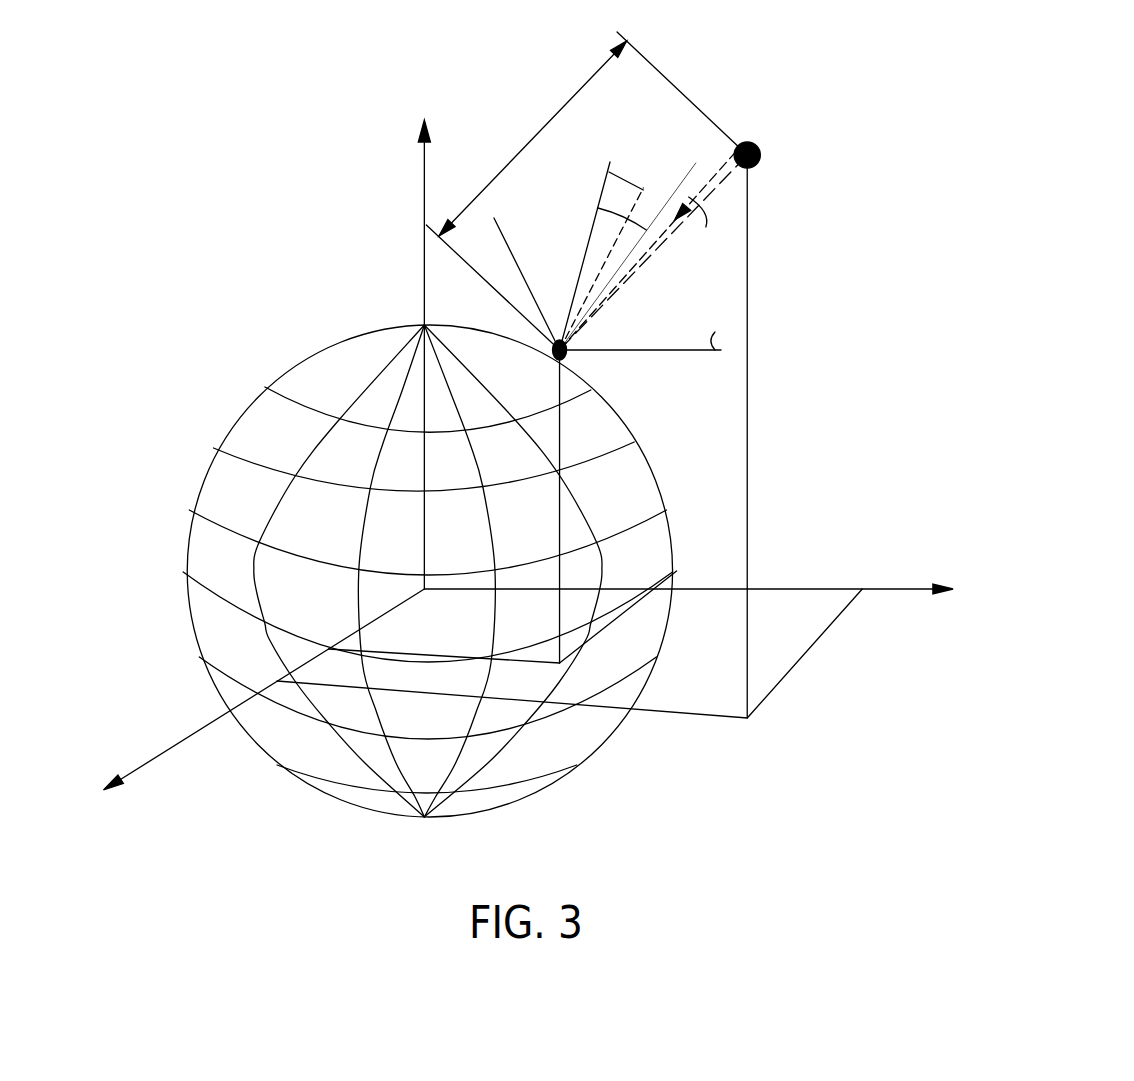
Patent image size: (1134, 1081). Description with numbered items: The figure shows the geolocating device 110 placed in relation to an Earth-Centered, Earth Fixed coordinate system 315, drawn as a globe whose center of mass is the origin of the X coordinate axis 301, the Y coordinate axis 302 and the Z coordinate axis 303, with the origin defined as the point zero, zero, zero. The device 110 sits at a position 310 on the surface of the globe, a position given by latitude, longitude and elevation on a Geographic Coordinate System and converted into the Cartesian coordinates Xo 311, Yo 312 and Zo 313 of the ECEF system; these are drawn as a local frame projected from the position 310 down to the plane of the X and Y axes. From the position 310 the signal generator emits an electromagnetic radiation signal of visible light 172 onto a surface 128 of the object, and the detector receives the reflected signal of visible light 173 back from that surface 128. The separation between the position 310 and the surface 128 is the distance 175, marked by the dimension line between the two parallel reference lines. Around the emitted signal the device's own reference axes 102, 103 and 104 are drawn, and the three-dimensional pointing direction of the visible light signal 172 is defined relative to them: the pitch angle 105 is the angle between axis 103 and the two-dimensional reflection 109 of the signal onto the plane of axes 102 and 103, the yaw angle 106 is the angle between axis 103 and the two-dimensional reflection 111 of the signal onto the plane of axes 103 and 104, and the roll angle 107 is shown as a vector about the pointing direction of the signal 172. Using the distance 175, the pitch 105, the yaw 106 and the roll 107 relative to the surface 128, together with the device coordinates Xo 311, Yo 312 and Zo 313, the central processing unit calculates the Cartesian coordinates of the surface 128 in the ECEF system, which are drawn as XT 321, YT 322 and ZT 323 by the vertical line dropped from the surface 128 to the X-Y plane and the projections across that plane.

The axis 102 is at (518, 262).
The axis 103 is at (596, 222).
The axis 104 is at (717, 321).
The pitch angle 105 is at (626, 172).
The yaw angle 106 is at (651, 226).
The roll angle 107 is at (709, 222).
The two-dimensional reflection 109 is at (647, 168).
The device 110 is at (572, 353).
The two-dimensional reflection 111 is at (688, 170).
The surface 128 is at (762, 151).
The electromagnetic radiation signal of visible light 172 is at (737, 179).
The reflected signal of visible light 173 is at (652, 262).
The distance 175 is at (586, 191).
The X coordinate axis 301 is at (913, 588).
The Y coordinate axis 302 is at (156, 750).
The Z coordinate axis 303 is at (425, 200).
The position of the device 310 is at (553, 353).
The Xo coordinate 311 is at (430, 600).
The Yo coordinate 312 is at (660, 628).
The Zo coordinate 313 is at (622, 432).
The Earth-Centered, Earth Fixed coordinate system 315 is at (237, 412).
The XT coordinate 321 is at (665, 762).
The YT coordinate 322 is at (862, 658).
The ZT coordinate 323 is at (812, 392).